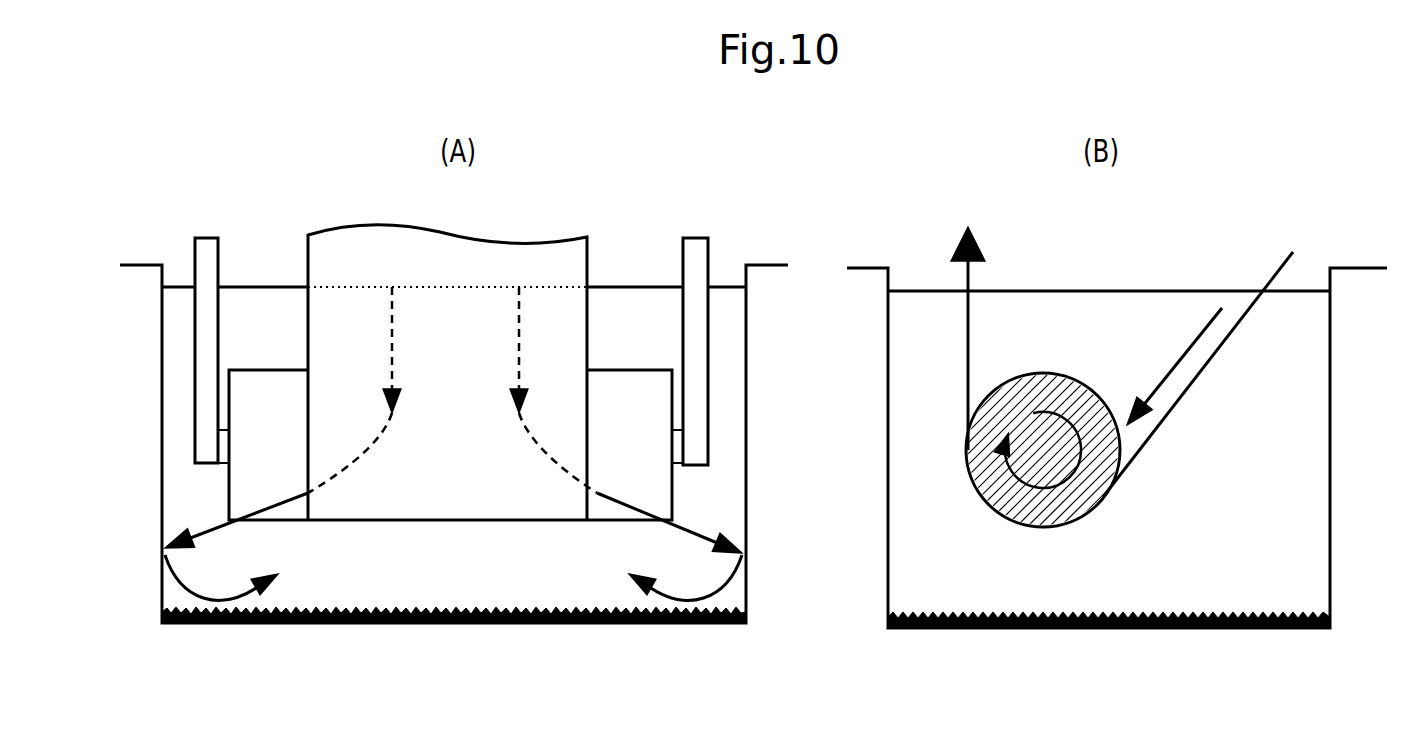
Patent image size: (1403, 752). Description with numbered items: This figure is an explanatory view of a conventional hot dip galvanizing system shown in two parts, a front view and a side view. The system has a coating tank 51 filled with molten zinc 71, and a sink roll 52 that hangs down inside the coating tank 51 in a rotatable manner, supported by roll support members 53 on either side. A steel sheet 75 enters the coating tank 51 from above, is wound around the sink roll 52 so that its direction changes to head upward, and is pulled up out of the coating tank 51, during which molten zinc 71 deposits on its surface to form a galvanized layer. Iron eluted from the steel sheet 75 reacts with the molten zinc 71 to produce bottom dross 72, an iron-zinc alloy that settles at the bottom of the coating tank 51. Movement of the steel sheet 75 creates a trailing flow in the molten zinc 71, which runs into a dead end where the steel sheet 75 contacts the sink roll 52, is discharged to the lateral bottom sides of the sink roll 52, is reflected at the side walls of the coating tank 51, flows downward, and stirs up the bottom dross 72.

The coating tank 51 is at (163, 317).
The sink roll 52 is at (262, 383).
The roll support members 53 is at (198, 352).
The molten zinc 71 is at (641, 350).
The bottom dross 72 is at (357, 612).
The steel sheet 75 is at (365, 350).